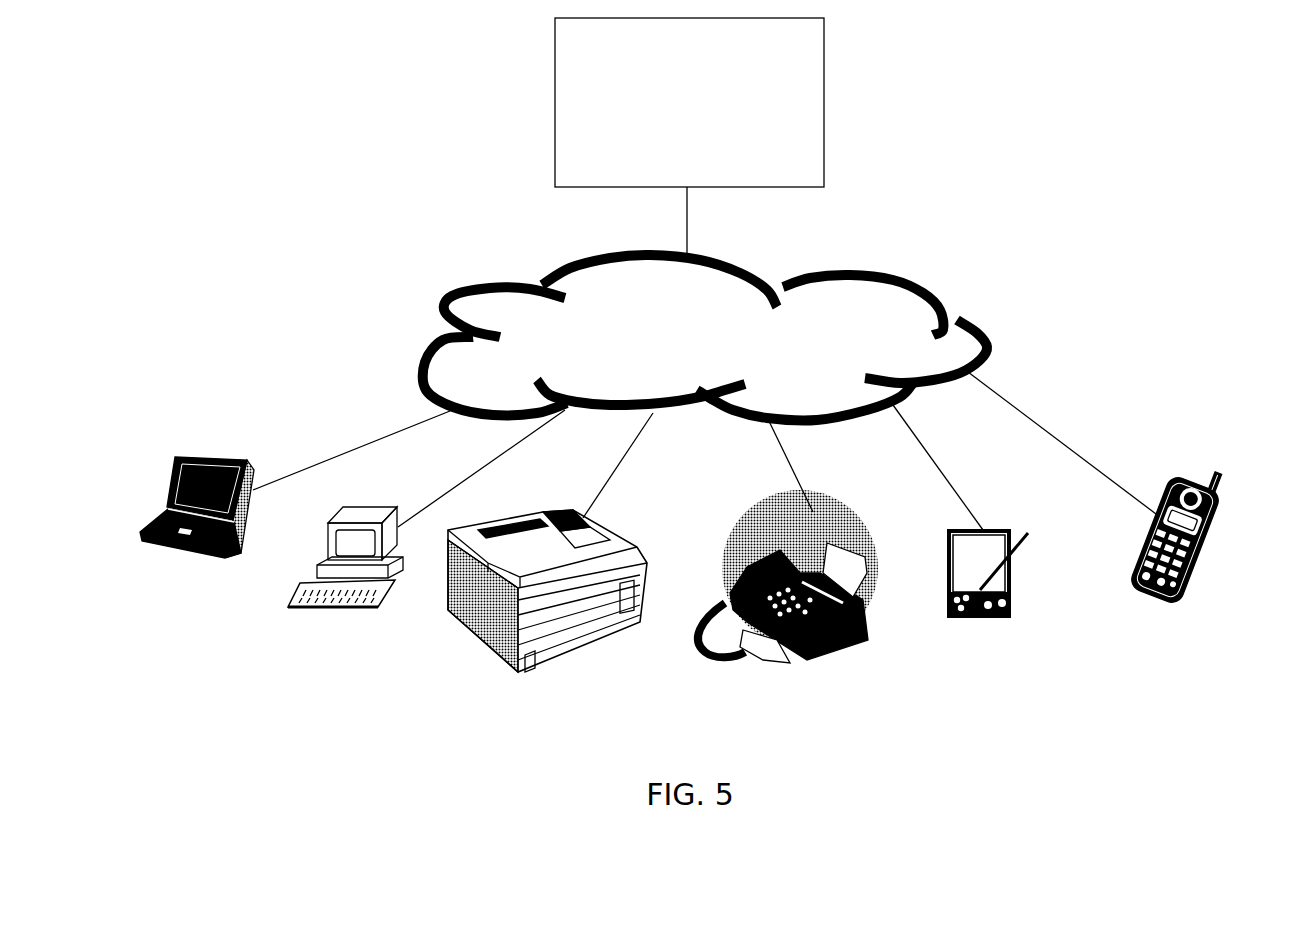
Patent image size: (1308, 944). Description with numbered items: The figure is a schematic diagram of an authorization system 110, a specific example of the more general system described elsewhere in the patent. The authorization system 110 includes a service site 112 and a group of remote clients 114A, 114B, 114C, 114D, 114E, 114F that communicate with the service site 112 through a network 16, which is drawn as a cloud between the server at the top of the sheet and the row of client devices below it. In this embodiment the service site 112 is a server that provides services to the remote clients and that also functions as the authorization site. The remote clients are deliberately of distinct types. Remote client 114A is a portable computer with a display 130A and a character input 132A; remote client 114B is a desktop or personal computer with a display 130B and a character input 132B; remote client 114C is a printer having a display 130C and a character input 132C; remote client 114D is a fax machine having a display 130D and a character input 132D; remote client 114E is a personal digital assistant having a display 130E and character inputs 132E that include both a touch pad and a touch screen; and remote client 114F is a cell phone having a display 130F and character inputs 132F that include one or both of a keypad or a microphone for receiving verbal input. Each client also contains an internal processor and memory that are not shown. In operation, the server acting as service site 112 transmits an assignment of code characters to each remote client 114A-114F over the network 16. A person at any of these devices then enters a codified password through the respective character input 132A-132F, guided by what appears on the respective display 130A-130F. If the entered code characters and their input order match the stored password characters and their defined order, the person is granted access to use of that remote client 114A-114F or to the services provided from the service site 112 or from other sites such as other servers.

The authorization system 110 is at (240, 113).
The service site 112 is at (824, 80).
The network 16 is at (913, 283).
The remote client 114A is at (162, 467).
The remote client 114B is at (311, 570).
The remote client 114C is at (578, 590).
The remote client 114D is at (820, 614).
The remote client 114E is at (968, 598).
The remote client 114F is at (1190, 538).
The display 130A is at (200, 457).
The display 130B is at (347, 542).
The display 130C is at (560, 510).
The display 130D is at (867, 600).
The display 130E is at (982, 547).
The display 130F is at (1165, 503).
The character input 132A is at (167, 520).
The character input 132B is at (293, 587).
The character input 132C is at (593, 528).
The character input 132D is at (777, 640).
The character inputs 132E is at (970, 573).
The character inputs 132F is at (1200, 477).